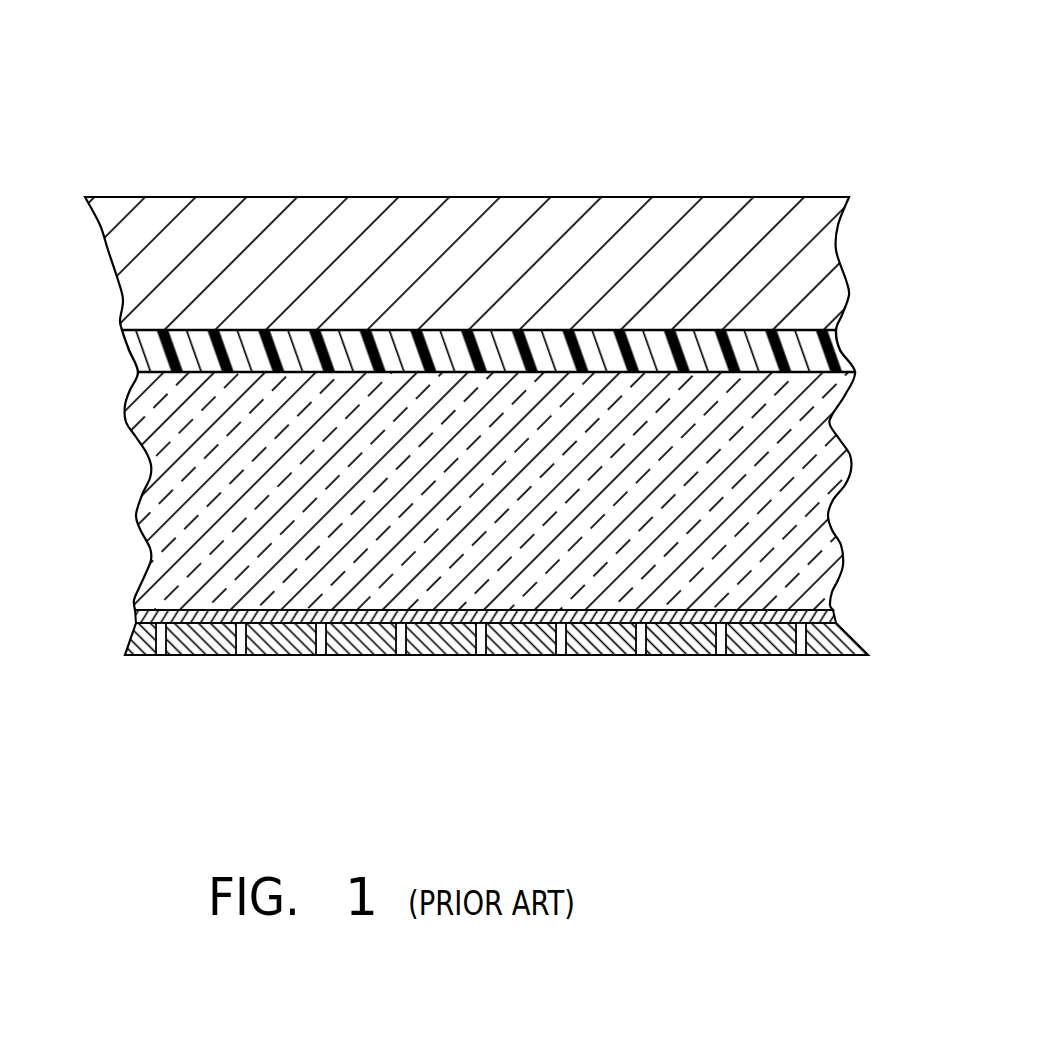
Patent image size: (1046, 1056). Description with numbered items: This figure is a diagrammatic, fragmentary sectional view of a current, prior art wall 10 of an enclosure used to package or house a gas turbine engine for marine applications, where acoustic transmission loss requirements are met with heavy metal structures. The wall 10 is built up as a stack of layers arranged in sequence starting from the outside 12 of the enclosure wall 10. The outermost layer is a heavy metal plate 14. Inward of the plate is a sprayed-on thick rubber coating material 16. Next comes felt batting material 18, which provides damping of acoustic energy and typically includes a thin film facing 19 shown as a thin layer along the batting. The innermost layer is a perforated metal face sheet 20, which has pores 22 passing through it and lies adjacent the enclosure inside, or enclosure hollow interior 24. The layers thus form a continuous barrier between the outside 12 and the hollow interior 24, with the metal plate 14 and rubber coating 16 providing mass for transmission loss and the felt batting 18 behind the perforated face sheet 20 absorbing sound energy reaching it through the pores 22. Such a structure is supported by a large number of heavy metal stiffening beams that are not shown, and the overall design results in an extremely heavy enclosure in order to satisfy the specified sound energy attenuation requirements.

The enclosure wall 10 is at (455, 384).
The outside of enclosure wall 12 is at (540, 151).
The heavy metal plate 14 is at (124, 276).
The sprayed-on thick rubber coating material 16 is at (140, 353).
The felt batting material 18 is at (150, 468).
The thin film facing 19 is at (140, 619).
The perforated metal face sheet 20 is at (138, 632).
The pores 22 is at (162, 657).
The enclosure hollow interior 24 is at (535, 742).